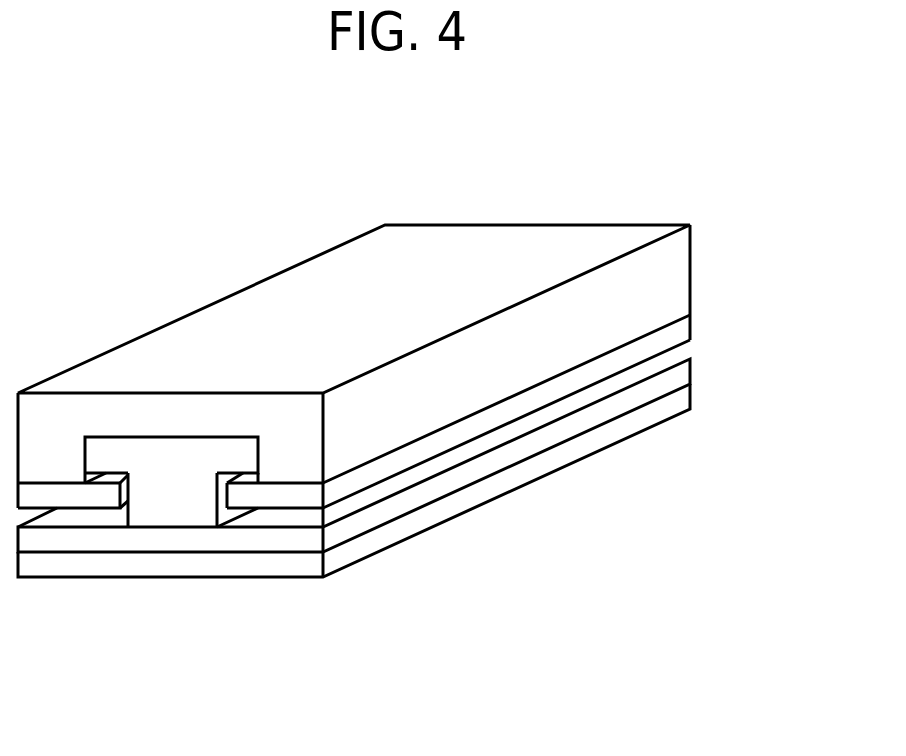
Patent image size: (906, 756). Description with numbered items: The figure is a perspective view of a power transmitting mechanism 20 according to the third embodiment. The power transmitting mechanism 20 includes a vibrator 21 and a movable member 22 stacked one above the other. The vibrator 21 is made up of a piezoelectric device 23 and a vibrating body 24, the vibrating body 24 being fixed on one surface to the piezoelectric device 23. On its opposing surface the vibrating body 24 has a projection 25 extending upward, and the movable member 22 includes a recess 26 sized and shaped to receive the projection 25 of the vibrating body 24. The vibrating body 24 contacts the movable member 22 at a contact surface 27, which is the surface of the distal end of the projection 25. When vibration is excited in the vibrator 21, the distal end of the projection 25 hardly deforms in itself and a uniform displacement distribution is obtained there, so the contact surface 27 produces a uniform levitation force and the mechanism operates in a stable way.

The power transmitting mechanism 20 is at (232, 264).
The vibrator 21 is at (763, 342).
The movable member 22 is at (680, 277).
The piezoelectric device 23 is at (680, 395).
The vibrating body 24 is at (680, 377).
The projection 25 is at (187, 513).
The recess 26 is at (222, 437).
The contact surface 27 is at (167, 440).